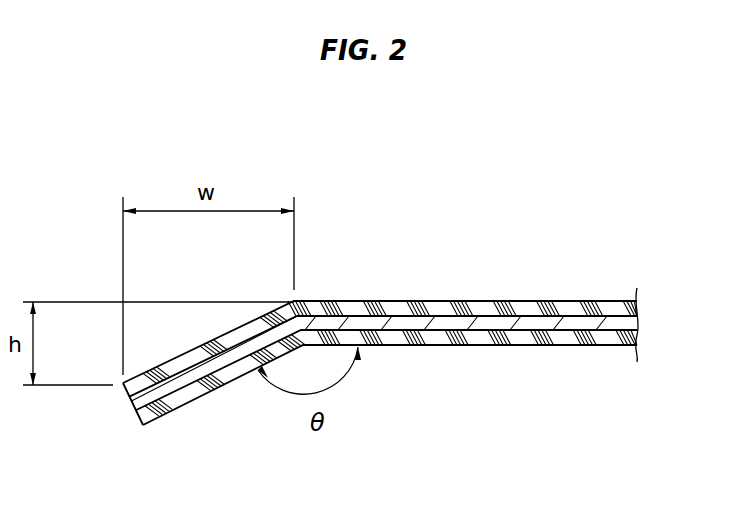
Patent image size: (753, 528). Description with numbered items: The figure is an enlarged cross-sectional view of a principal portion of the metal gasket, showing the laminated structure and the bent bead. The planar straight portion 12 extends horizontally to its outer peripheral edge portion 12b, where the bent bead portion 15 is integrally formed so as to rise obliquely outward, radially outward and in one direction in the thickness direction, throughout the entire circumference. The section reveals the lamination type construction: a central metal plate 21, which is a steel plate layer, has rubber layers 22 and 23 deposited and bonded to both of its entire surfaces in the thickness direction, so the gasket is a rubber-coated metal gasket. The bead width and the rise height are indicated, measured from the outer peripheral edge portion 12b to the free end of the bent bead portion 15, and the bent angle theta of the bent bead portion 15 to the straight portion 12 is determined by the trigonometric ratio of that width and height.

The straight portion 12 is at (483, 322).
The outer peripheral edge portion 12b is at (295, 299).
The bent bead portion 15 is at (188, 377).
The metal plate 21 is at (630, 325).
The rubber layer 22 is at (565, 310).
The rubber layer 23 is at (558, 338).